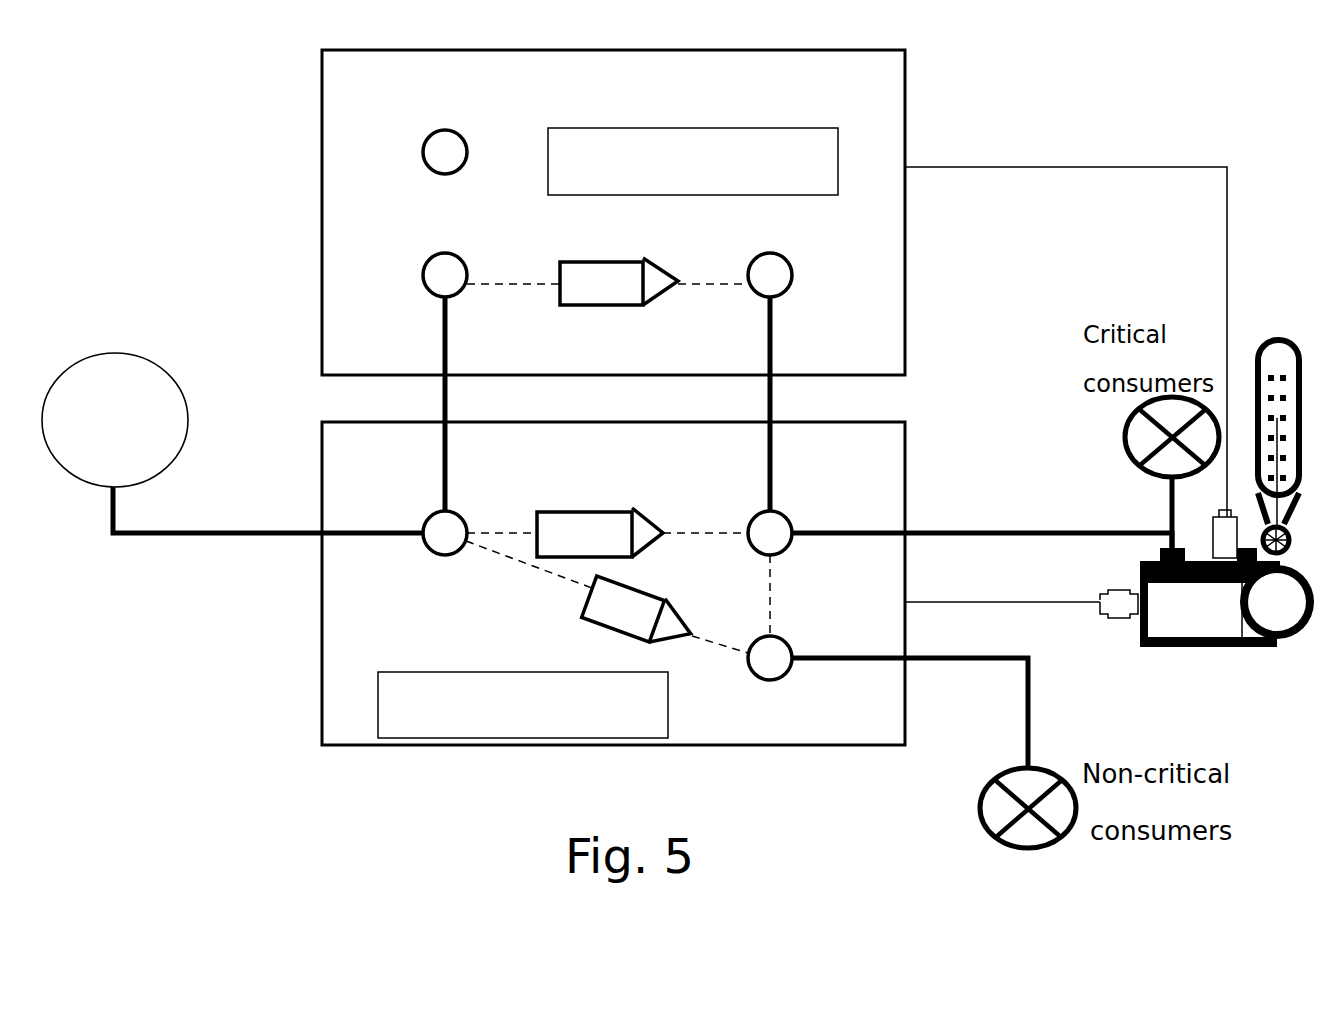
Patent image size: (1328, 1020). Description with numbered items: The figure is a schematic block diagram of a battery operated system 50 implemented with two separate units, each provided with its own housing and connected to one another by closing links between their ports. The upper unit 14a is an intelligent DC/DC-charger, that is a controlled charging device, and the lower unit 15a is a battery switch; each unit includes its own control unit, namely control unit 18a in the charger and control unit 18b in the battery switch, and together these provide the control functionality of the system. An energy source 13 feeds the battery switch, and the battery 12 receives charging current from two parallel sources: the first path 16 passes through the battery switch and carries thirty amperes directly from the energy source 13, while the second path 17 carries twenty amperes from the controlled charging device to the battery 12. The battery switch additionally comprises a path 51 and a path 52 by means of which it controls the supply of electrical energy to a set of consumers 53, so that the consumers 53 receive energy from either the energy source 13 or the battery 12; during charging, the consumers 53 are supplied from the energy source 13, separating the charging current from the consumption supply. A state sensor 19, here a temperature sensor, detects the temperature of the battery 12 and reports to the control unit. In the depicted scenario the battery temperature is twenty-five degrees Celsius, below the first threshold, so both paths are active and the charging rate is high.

The battery operated system 50 is at (1190, 140).
The energy source 13 is at (157, 366).
The intelligent DC/DC-charger unit 14a is at (905, 257).
The battery switch unit 15a is at (905, 565).
The control unit of the DC/DC-charger 18a is at (591, 128).
The control unit of the battery switch 18b is at (421, 672).
The second path 17 is at (768, 372).
The first path 16 is at (672, 532).
The path 51 is at (728, 648).
The path 52 is at (772, 572).
The set of consumers 53 is at (980, 809).
The state sensor 19 is at (1121, 616).
The battery 12 is at (1227, 647).